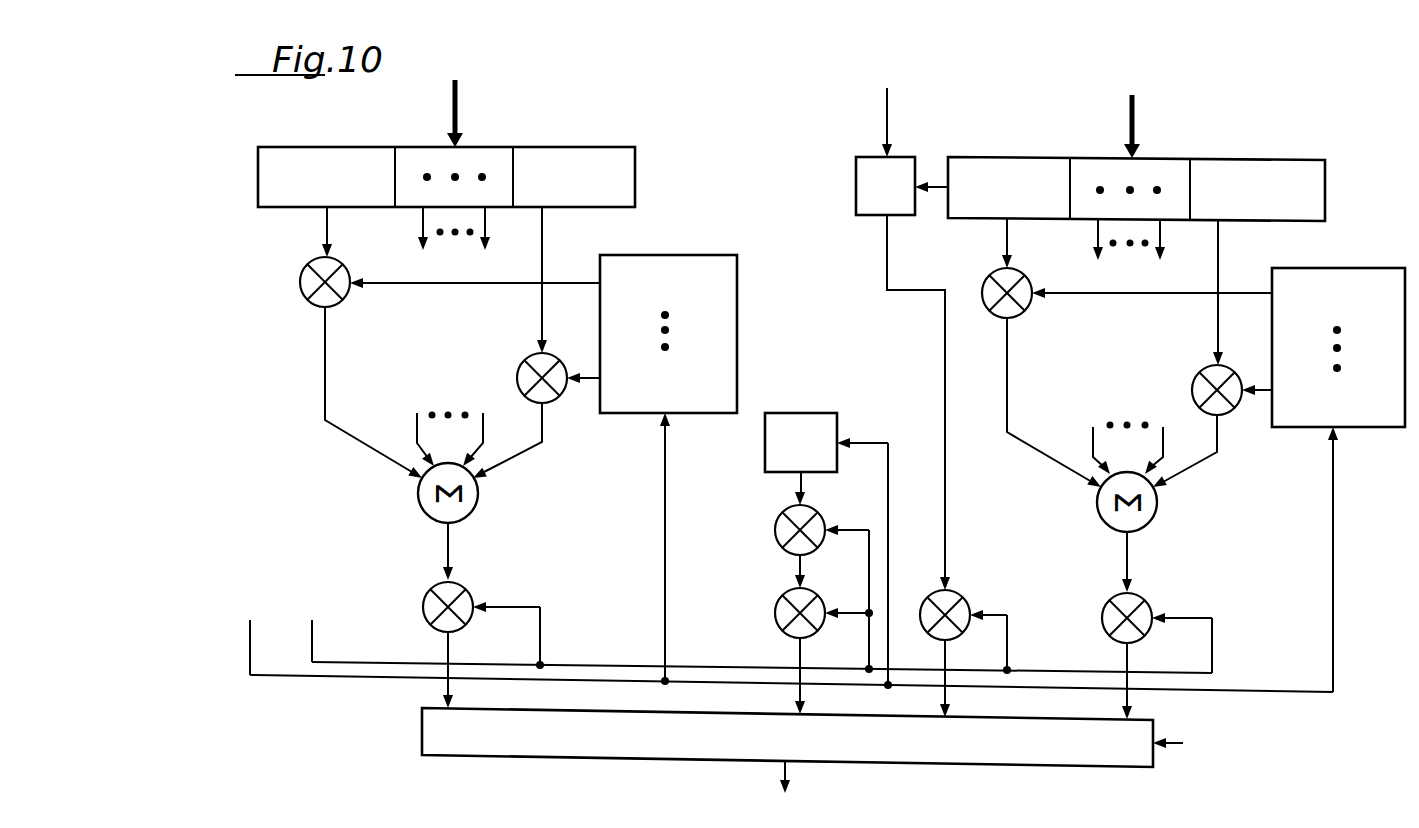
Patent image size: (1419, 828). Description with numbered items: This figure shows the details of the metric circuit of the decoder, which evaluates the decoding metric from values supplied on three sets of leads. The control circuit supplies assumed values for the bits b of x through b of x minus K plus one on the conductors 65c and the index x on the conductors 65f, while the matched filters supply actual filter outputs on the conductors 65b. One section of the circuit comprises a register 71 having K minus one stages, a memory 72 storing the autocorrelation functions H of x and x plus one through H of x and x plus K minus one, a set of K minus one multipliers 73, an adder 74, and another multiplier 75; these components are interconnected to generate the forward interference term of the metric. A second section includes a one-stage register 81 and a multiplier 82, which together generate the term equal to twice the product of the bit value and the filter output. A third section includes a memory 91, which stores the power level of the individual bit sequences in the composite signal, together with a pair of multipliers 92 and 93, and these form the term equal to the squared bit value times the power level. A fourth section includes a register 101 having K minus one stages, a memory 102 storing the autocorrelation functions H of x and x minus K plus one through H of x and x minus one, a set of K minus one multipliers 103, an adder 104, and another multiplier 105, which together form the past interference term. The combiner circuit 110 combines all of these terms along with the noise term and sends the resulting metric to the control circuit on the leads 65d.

The register 101 is at (418, 153).
The conductors 65c is at (456, 103).
The memory 102 is at (695, 265).
The multipliers 103 is at (308, 292).
The adder 104 is at (480, 505).
The multiplier 105 is at (427, 593).
The combiner circuit 110 is at (432, 728).
The conductors 65f is at (272, 680).
The conductor 65d is at (790, 775).
The one-stage register 81 is at (856, 182).
The conductors 65b is at (888, 112).
The register 71 is at (1097, 160).
The memory 72 is at (1377, 270).
The multipliers 73 is at (1023, 312).
The adder 74 is at (1150, 512).
The multiplier 75 is at (1112, 593).
The multiplier 82 is at (960, 593).
The memory 91 is at (805, 413).
The multiplier 92 is at (777, 528).
The multiplier 93 is at (777, 603).